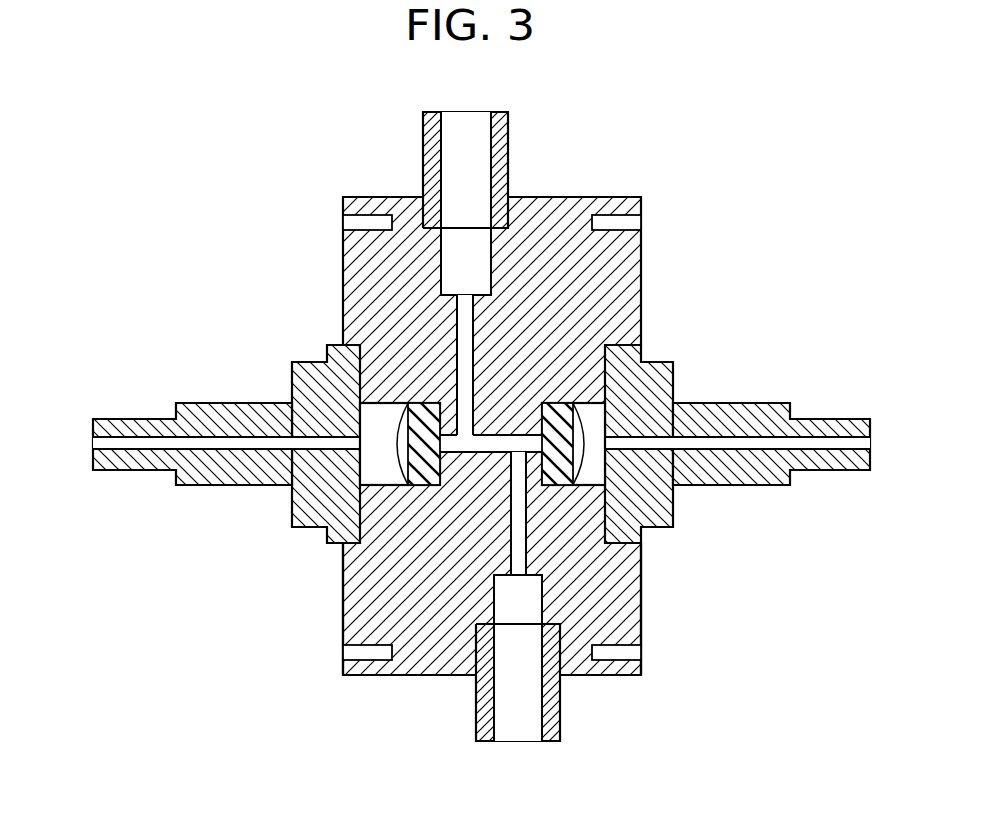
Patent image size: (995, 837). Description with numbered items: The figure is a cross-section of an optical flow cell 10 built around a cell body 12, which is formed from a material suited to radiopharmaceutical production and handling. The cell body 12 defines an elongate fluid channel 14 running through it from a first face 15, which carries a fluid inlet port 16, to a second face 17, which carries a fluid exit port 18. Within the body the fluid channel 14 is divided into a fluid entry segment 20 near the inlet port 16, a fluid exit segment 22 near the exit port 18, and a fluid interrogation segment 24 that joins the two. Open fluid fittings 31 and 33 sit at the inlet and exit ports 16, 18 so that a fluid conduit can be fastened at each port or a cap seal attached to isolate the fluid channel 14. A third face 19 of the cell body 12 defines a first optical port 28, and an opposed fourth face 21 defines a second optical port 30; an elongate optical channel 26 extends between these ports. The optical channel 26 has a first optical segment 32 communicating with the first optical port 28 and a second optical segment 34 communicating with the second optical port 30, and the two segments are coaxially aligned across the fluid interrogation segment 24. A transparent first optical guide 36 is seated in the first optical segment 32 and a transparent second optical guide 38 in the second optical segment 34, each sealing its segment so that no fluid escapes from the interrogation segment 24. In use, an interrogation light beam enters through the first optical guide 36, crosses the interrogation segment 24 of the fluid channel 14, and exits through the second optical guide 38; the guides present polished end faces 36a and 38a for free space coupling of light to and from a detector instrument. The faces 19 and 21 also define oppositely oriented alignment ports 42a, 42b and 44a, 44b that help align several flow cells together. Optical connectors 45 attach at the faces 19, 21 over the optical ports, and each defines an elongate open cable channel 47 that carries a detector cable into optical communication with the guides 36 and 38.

The flow cell 10 is at (577, 105).
The cell body 12 is at (640, 250).
The fluid channel 14 is at (458, 313).
The first face 15 is at (372, 186).
The fluid inlet port 16 is at (466, 236).
The second face 17 is at (603, 680).
The fluid exit port 18 is at (517, 675).
The third face 19 is at (337, 635).
The fluid entry segment 20 is at (458, 327).
The fourth face 21 is at (646, 600).
The fluid exit segment 22 is at (523, 572).
The fluid interrogation segment 24 is at (472, 443).
The optical channel 26 is at (515, 447).
The first optical port 28 is at (370, 462).
The second optical port 30 is at (606, 414).
The fluid fitting 31 is at (505, 118).
The first optical segment 32 is at (380, 418).
The fluid fitting 33 is at (553, 727).
The second optical segment 34 is at (602, 472).
The first optical guide 36 is at (423, 468).
The polished end face 36a is at (392, 445).
The second optical guide 38 is at (563, 413).
The polished end face 38a is at (590, 446).
The alignment port 42a is at (341, 218).
The alignment port 42b is at (346, 654).
The alignment port 44a is at (646, 223).
The alignment port 44b is at (646, 652).
The optical connector 45 is at (130, 463).
The cable channel 47 is at (140, 445).